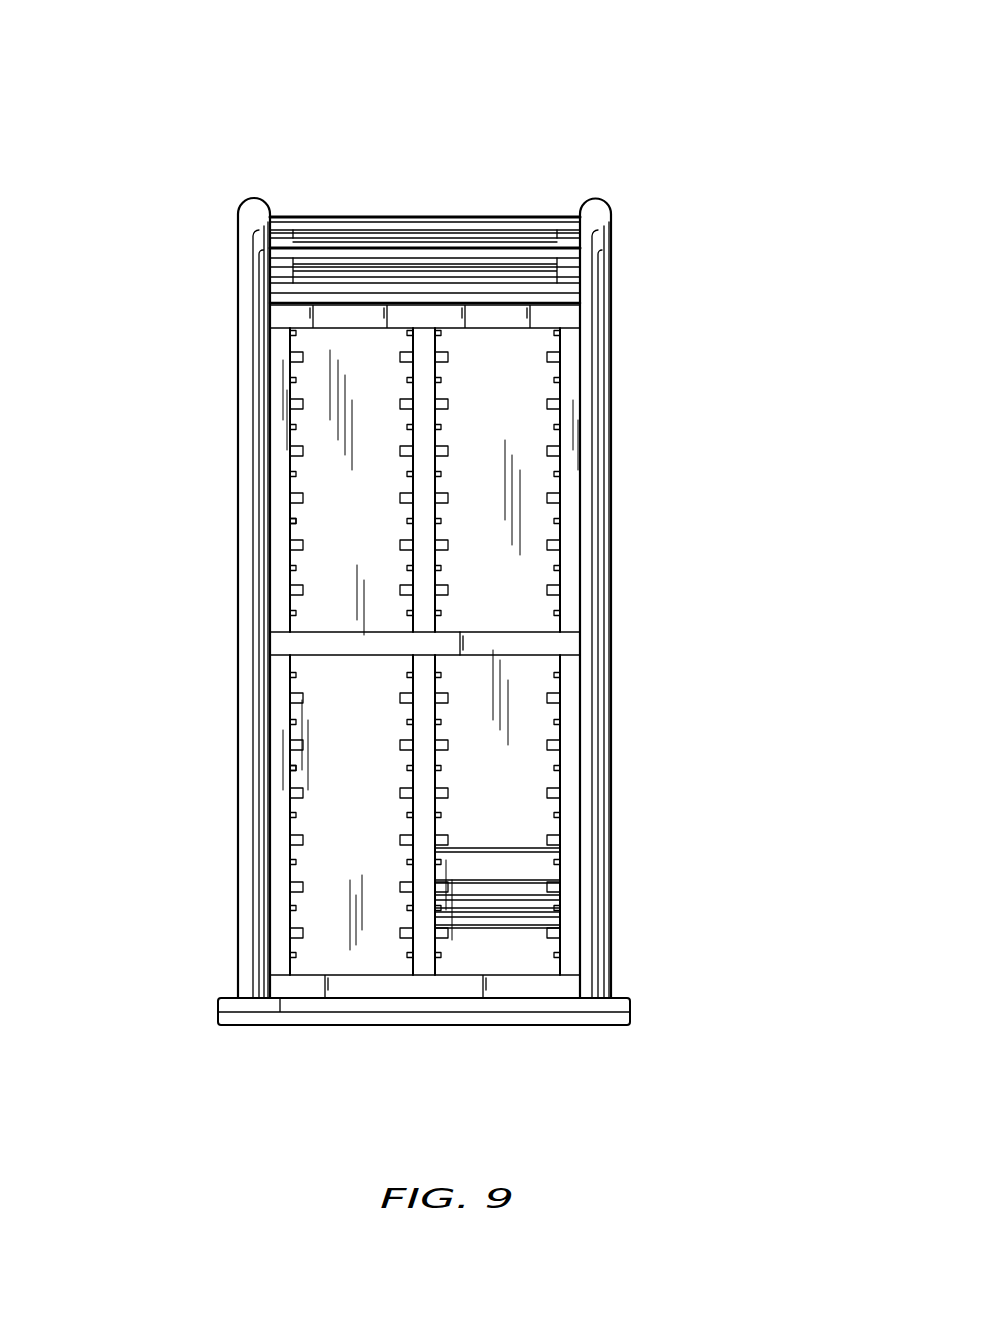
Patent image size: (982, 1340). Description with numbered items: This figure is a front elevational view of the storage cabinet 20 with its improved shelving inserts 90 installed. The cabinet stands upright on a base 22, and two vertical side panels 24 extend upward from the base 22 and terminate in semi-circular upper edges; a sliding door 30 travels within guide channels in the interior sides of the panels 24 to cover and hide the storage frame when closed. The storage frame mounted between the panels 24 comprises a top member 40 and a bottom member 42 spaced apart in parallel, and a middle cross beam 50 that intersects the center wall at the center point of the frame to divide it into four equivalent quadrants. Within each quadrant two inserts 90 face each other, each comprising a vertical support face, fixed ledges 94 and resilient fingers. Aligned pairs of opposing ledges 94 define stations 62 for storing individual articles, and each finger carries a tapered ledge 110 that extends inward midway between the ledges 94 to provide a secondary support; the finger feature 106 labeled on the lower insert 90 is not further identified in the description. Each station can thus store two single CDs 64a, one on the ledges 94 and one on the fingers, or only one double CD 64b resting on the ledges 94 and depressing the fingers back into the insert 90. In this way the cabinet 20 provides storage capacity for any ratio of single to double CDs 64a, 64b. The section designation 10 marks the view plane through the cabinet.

The section line 10- 10 is at (450, 167).
The storage cabinet 20 is at (400, 544).
The base 22 is at (388, 1030).
The side panels 24 is at (248, 410).
The sliding door 30 is at (436, 195).
The top member 40 is at (555, 313).
The bottom member 42 is at (537, 988).
The middle cross beam 50 is at (523, 642).
The station 62 is at (290, 873).
The thin articles 64a is at (553, 922).
The thicker article 64b is at (552, 855).
The shelving inserts 90 is at (280, 355).
The fixed ledges 94 is at (290, 483).
The connector tab 106 is at (299, 775).
The tapered ledge 110 is at (290, 527).